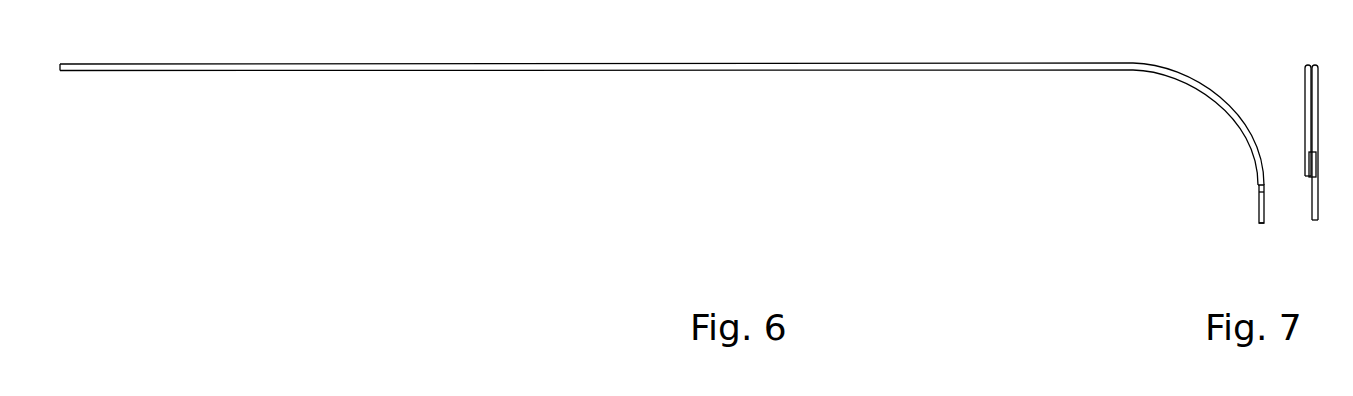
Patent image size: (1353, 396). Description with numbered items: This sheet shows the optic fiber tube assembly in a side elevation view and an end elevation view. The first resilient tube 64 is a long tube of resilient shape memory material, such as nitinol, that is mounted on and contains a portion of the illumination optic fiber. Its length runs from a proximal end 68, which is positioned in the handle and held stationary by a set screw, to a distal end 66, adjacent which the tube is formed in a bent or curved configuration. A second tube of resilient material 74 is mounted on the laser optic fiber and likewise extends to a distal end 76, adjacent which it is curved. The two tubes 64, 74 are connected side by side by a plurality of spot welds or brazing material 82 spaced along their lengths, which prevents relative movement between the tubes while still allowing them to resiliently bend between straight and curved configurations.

In FIG. 6, the first resilient tube 64 is at (943, 68).
In FIG. 7, the first resilient tube 64 is at (1309, 90).
In FIG. 6, the distal end of the first tube 66 is at (1258, 189).
In FIG. 7, the distal end of the first tube 66 is at (1312, 183).
In FIG. 6, the proximal end of the first tube 68 is at (58, 68).
In FIG. 6, the second tube of resilient material 74 is at (1258, 208).
In FIG. 7, the second tube of resilient material 74 is at (1315, 82).
In FIG. 6, the distal end of the second tube 76 is at (1262, 224).
In FIG. 7, the distal end of the second tube 76 is at (1317, 223).
In FIG. 7, the spot welds or brazing material 82 is at (1311, 162).